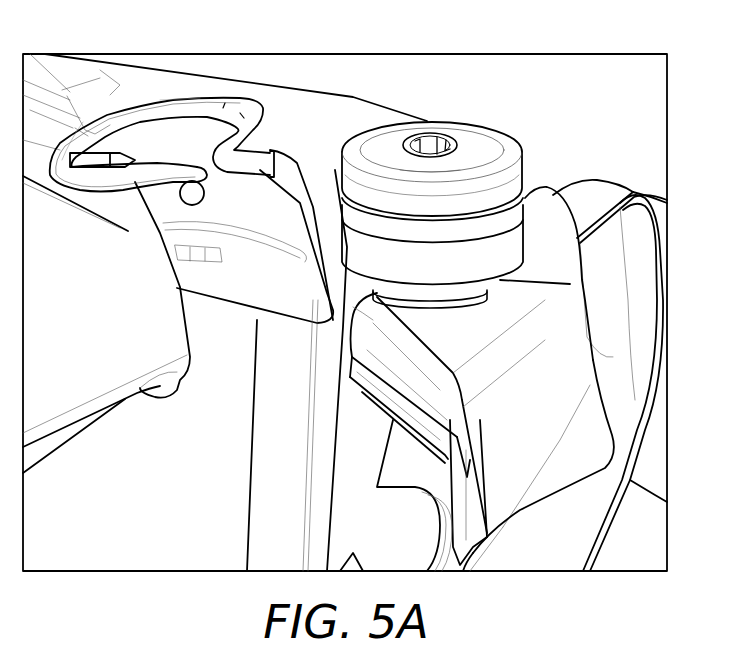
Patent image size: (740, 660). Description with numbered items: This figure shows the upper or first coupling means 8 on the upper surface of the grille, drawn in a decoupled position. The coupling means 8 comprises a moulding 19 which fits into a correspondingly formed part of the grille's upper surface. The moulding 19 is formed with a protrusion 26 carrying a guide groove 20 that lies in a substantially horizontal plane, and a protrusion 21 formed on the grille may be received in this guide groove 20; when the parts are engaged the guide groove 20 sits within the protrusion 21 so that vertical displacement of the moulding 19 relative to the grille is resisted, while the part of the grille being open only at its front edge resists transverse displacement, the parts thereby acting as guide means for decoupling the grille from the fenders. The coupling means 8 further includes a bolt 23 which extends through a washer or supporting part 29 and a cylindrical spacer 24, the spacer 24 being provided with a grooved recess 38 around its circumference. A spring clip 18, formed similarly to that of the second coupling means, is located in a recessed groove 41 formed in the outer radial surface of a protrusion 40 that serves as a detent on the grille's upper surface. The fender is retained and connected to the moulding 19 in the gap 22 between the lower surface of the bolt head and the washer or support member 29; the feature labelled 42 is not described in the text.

The upper or first coupling means 8 is at (547, 113).
The spring clip 18 is at (240, 120).
The moulding 19 is at (530, 487).
The guide groove 20 is at (393, 398).
The protrusion 21 is at (217, 240).
The gap 22 is at (520, 207).
The bolt 23 is at (458, 131).
The cylindrical spacer 24 is at (488, 297).
The protrusion 26 is at (366, 340).
The washer or supporting part 29 is at (513, 247).
The grooved recess 38 is at (442, 299).
The protrusion 40 is at (100, 132).
The recessed groove 41 is at (137, 105).
The spring clip arc 42 is at (182, 135).